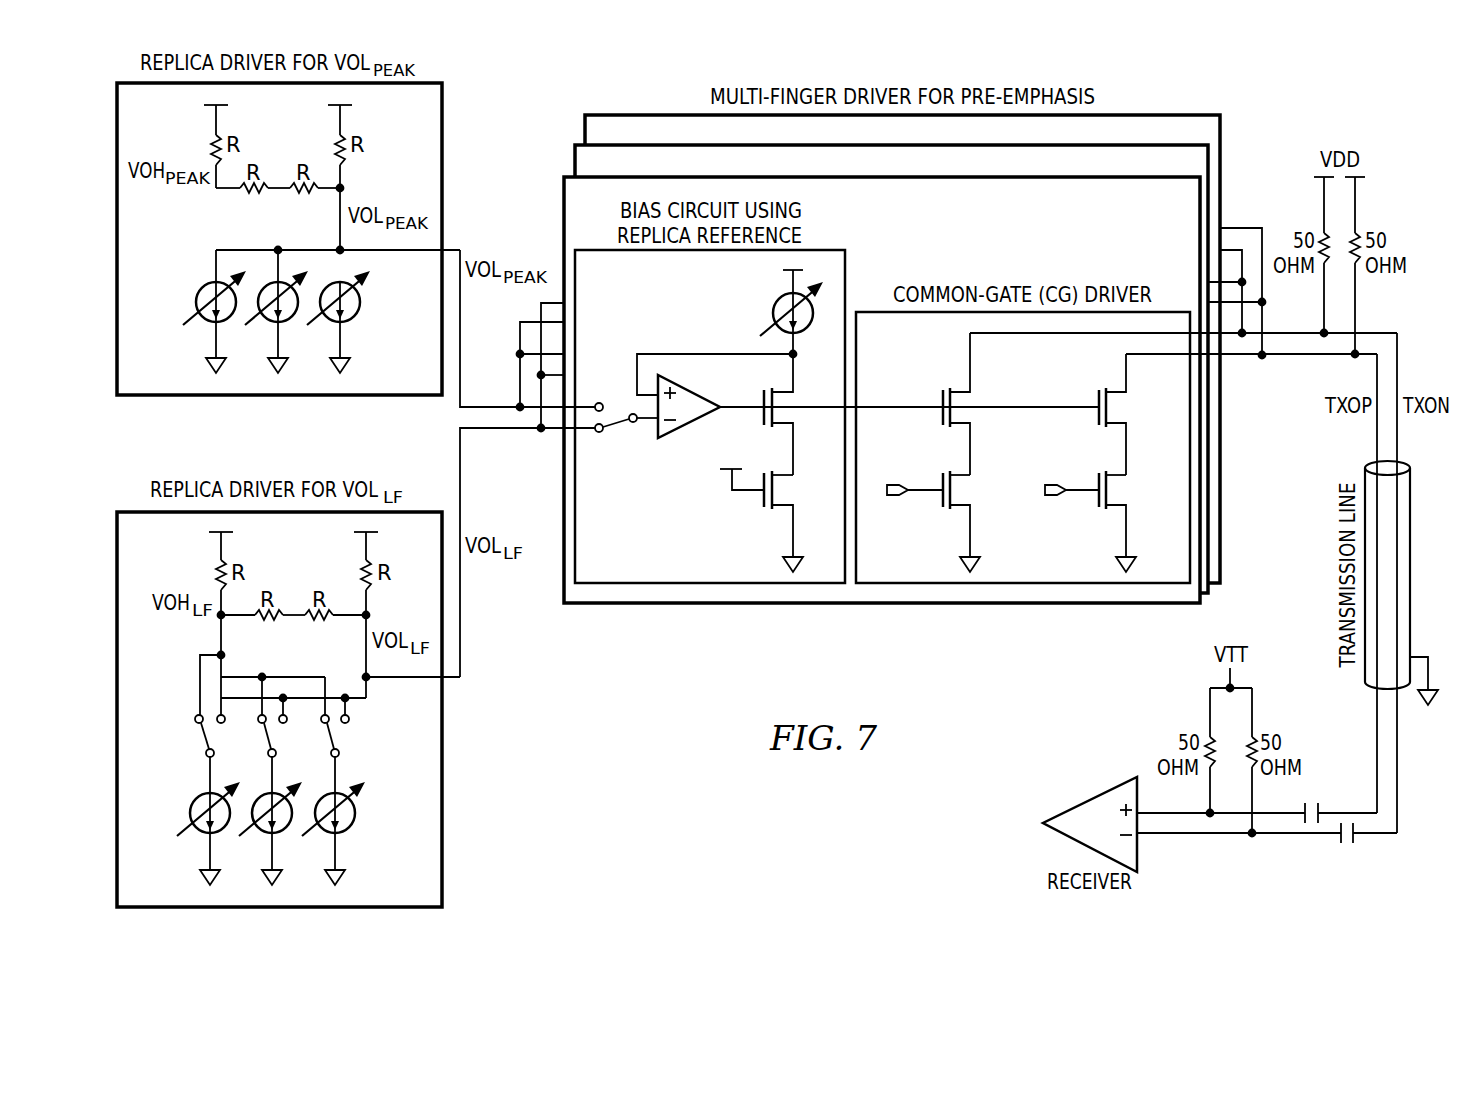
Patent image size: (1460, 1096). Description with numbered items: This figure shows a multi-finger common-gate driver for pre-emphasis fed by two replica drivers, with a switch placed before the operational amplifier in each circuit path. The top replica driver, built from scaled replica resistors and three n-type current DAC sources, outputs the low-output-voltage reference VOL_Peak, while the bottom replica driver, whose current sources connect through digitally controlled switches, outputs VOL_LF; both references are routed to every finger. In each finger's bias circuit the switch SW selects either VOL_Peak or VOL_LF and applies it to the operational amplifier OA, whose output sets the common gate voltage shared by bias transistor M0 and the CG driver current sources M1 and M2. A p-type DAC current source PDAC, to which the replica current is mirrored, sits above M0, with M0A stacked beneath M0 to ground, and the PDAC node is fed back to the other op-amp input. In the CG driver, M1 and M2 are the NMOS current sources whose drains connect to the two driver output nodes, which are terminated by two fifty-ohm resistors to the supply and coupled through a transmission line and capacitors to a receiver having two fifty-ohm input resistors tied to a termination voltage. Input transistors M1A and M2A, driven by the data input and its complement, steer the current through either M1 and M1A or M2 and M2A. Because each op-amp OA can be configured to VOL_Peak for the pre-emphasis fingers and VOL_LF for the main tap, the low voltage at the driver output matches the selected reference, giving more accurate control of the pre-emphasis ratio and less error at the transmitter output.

The p-type digital-to-analog converter current source PDAC is at (767, 312).
The switch SW is at (626, 430).
The operational amplifier OA is at (689, 416).
The bias transistor M0 is at (795, 414).
The bias transistor M0A is at (779, 520).
The CG driver NMOS current source M1 is at (972, 404).
The input switch transistor M1A is at (943, 516).
The CG driver NMOS current source M2 is at (1126, 414).
The input switch transistor M2A is at (1096, 516).